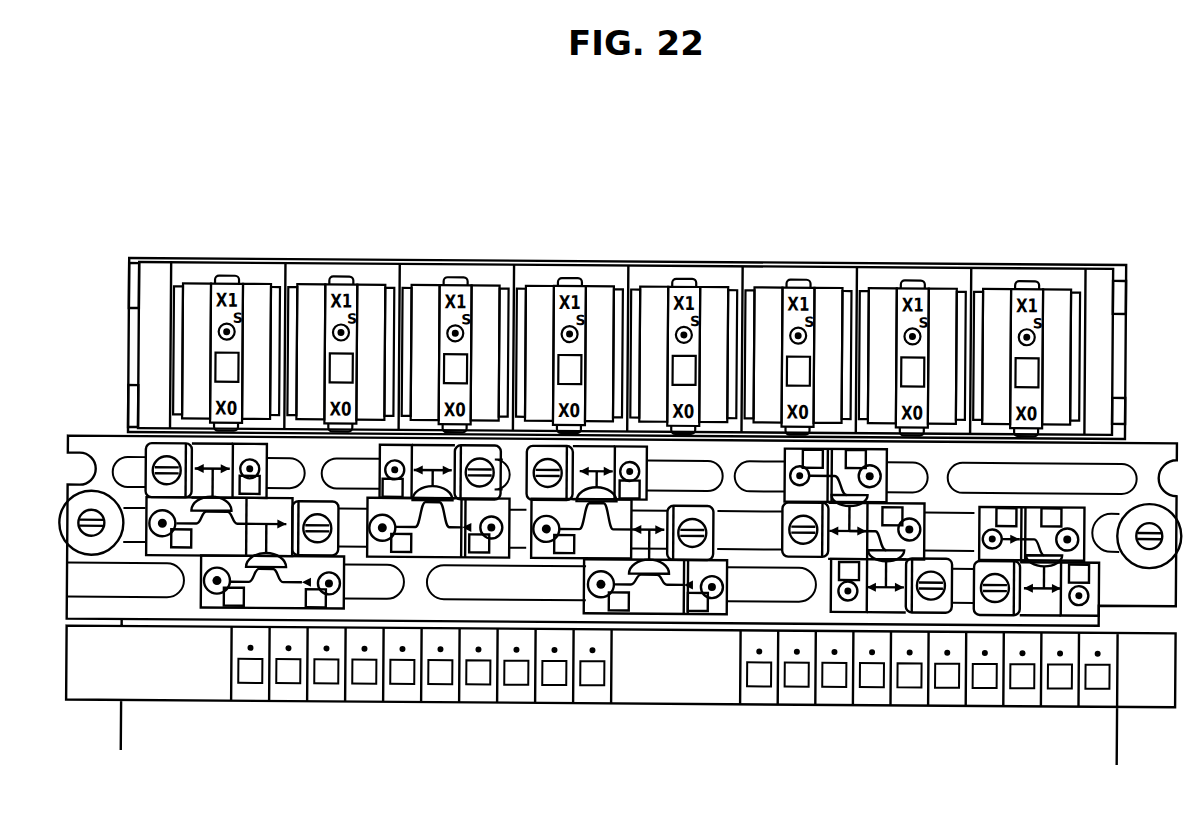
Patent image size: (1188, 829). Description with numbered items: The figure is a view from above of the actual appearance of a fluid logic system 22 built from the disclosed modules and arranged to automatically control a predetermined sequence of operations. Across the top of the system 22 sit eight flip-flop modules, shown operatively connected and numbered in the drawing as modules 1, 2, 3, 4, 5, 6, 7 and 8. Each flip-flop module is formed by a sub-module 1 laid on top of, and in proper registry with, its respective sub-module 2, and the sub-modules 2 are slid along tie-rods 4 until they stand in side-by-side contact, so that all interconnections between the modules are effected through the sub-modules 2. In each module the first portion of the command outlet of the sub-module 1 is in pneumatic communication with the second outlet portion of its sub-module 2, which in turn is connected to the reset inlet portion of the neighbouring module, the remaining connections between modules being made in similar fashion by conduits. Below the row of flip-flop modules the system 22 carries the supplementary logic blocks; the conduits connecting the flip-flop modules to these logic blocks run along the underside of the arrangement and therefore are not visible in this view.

The fluid logic system 22 is at (622, 512).
The sub-module 1 is at (226, 353).
The sub-module 2 is at (340, 354).
The thumbwheel switch module 3 is at (455, 355).
The tie-rods 4 is at (569, 356).
The thumbwheel switch module 5 is at (683, 357).
The thumbwheel switch module 6 is at (797, 357).
The thumbwheel switch module 7 is at (912, 358).
The thumbwheel switch module 8 is at (1026, 359).